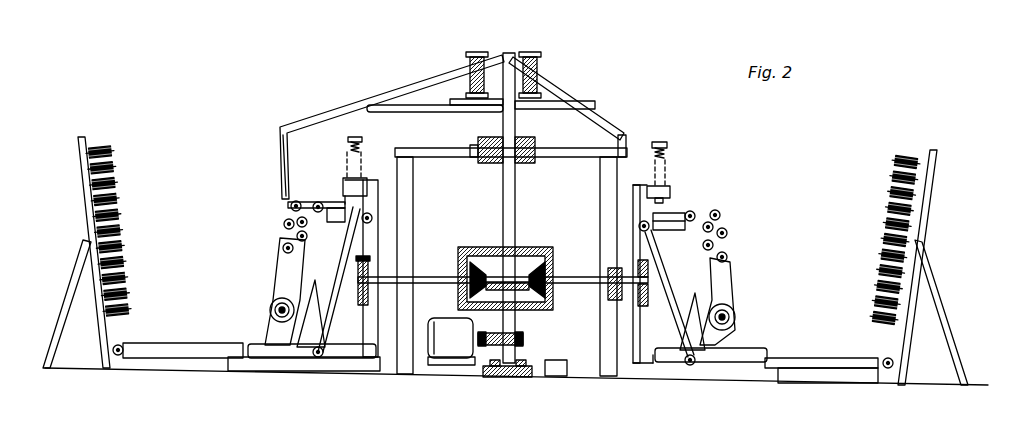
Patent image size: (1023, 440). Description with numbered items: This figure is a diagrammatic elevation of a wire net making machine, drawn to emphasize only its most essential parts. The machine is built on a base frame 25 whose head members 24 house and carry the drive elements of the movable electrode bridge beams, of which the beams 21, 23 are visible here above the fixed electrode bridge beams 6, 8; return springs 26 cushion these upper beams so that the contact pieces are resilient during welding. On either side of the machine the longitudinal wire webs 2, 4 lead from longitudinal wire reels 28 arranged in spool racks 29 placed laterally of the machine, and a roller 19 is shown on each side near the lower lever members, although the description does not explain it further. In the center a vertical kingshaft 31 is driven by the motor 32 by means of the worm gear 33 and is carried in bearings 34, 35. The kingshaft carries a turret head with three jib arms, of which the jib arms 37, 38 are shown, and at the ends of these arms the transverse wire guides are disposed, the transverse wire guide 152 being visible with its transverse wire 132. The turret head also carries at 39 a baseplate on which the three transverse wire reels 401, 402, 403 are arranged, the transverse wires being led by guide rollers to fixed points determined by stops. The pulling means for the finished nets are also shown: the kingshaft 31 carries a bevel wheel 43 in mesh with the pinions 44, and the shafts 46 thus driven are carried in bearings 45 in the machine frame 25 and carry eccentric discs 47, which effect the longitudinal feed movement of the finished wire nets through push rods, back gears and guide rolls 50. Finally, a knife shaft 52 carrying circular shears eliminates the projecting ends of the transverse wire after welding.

The longitudinal wire web 2 is at (178, 372).
The longitudinal wire web 4 is at (832, 372).
The electrode bridge 6 is at (352, 210).
The electrode bridge 8 is at (672, 212).
The transverse wire 132 is at (310, 202).
The transverse wire guide 152 is at (280, 200).
The roller 19 is at (270, 310).
The movable electrode bridge beam 21 is at (345, 192).
The movable electrode bridge beam 23 is at (672, 190).
The head member 24 is at (378, 169).
The base frame 25 is at (405, 195).
The return spring 26 is at (363, 147).
The longitudinal wire reel 28 is at (125, 240).
The spool rack 29 is at (83, 205).
The kingshaft 31 is at (516, 196).
The motor 32 is at (456, 352).
The worm gear 33 is at (500, 338).
The bearing 34 is at (509, 366).
The bearing 35 is at (533, 141).
The jib arm 37 is at (372, 100).
The jib arm 38 is at (598, 112).
The baseplate 39 is at (462, 112).
The transverse wire reel 402 is at (472, 55).
The transverse wire reel 403 is at (562, 62).
The transverse wire reel 401 is at (540, 58).
The bevel wheel 43 is at (540, 298).
The pinion 44 is at (478, 266).
The bearing 45 is at (372, 296).
The shaft 46 is at (432, 276).
The eccentric disc 47 is at (345, 268).
The guide roll 50 is at (308, 226).
The knife shaft 52 is at (286, 222).